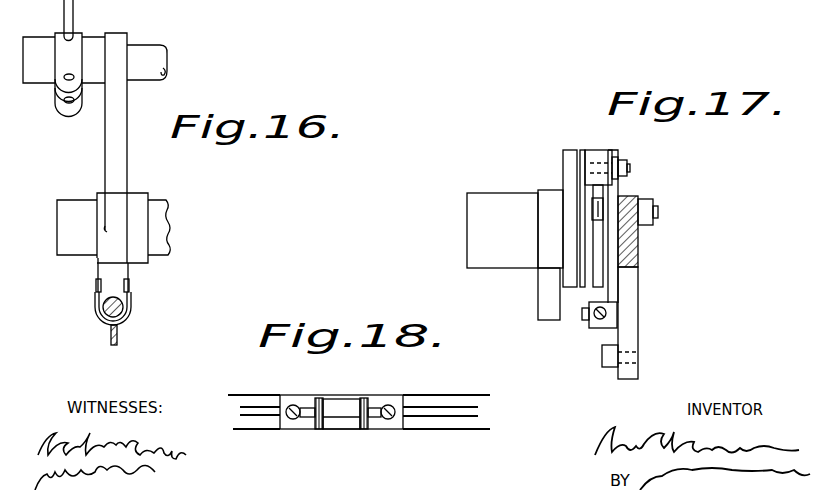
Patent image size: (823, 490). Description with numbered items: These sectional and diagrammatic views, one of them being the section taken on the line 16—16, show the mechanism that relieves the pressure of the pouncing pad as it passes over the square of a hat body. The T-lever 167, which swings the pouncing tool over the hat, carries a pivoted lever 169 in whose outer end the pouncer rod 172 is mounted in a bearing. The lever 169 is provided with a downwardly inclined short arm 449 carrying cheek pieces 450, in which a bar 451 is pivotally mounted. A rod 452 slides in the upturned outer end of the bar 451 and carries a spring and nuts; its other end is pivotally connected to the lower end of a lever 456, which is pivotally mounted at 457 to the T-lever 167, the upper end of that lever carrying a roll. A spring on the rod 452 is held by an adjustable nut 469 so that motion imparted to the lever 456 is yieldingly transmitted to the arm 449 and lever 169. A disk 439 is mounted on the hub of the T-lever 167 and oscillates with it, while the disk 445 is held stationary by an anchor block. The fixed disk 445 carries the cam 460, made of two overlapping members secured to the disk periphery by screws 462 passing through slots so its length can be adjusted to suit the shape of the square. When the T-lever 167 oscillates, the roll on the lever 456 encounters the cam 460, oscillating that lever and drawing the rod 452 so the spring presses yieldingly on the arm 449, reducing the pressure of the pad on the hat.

In FIG. 16, the numeral from adjoining figure 16 is at (225, 13).
In FIG. 16, the adjustable nut 469 is at (333, 11).
In FIG. 16, the rod 172 is at (146, 54).
In FIG. 16, the lever 169 is at (108, 145).
In FIG. 16, the short arm 449 is at (104, 266).
In FIG. 16, the cheek pieces 450 is at (129, 292).
In FIG. 16, the bar 451 is at (118, 342).
In FIG. 16, the rod 452 is at (107, 323).
In FIG. 17, the rod 452 is at (618, 315).
In FIG. 17, the disk 439 is at (568, 165).
In FIG. 17, the lever 456 is at (613, 192).
In FIG. 17, the pivot 457 is at (659, 208).
In FIG. 17, the T-lever 167 is at (630, 242).
In FIG. 18, the disk 445 is at (457, 425).
In FIG. 18, the cam 460 is at (355, 431).
In FIG. 18, the screws 462 is at (303, 387).